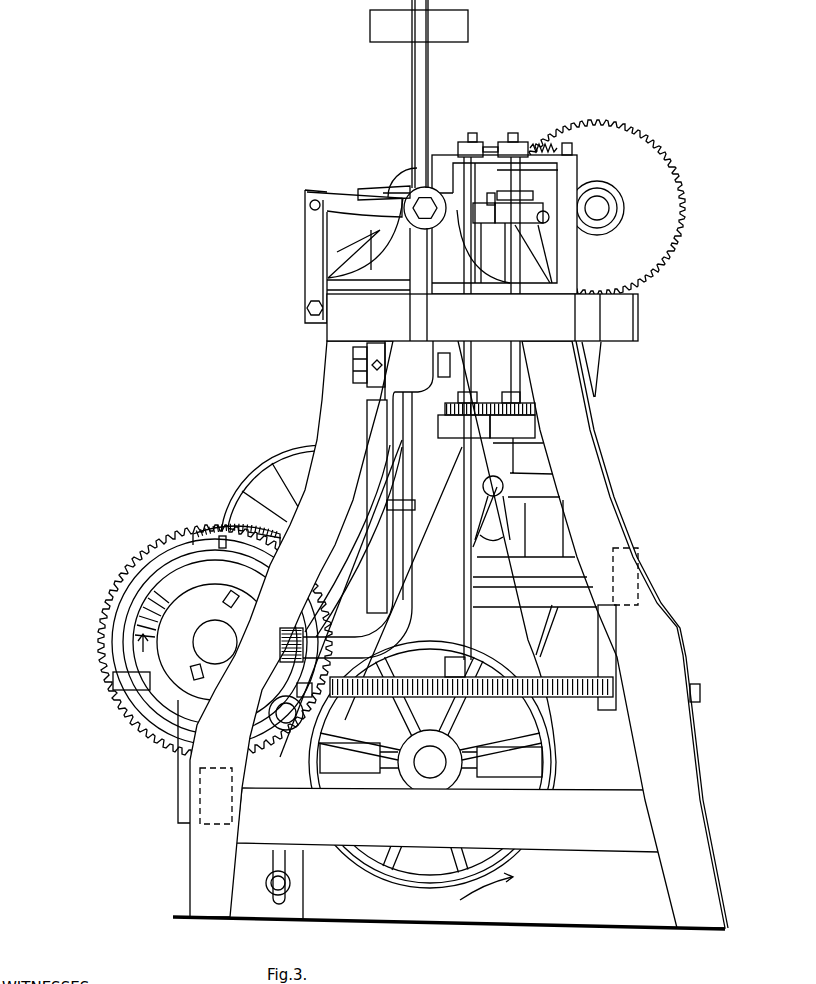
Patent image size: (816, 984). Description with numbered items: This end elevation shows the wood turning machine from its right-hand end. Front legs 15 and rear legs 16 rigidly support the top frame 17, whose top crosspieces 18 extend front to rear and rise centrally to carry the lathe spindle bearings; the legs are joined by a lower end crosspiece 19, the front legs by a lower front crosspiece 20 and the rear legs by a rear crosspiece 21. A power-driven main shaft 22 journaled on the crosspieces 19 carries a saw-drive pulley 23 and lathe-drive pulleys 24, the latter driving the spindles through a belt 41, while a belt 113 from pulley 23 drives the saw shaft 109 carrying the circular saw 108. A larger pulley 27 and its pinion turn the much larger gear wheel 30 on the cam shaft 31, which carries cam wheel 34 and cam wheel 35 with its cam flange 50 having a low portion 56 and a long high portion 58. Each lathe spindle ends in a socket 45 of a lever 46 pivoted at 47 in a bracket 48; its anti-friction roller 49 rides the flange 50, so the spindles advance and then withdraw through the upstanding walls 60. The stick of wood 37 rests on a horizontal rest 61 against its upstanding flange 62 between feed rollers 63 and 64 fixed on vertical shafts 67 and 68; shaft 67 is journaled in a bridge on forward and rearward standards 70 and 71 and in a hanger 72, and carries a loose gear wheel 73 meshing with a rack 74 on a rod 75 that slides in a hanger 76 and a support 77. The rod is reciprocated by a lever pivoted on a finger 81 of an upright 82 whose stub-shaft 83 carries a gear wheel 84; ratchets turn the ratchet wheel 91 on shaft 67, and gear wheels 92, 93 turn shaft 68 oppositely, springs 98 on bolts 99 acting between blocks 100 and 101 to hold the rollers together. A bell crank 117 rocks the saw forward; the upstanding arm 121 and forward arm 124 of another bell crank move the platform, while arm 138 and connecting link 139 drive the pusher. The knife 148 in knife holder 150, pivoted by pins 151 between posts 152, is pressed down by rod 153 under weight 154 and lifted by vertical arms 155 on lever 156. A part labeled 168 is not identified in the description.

The front legs 15 is at (316, 441).
The rear legs 16 is at (625, 634).
The top frame 17 is at (298, 341).
The top crosspieces 18 is at (391, 250).
The lower end crosspieces 19 is at (447, 820).
The lower front crosspiece 20 is at (198, 830).
The rear crosspiece 21 is at (642, 575).
The main shaft 22 is at (430, 762).
The saw-drive pulley 23 is at (510, 713).
The lathe-drive pulleys 24 is at (542, 759).
The larger pulley 27 is at (265, 466).
The gear wheel 30 is at (150, 555).
The cam shaft 31 is at (215, 642).
The cam wheel 34 is at (140, 607).
The cam wheels 35 is at (204, 635).
The stick of wood 37 is at (495, 188).
The belt 41 is at (557, 776).
The socket 45 is at (433, 230).
The lever 46 is at (410, 312).
The pivot 47 is at (352, 362).
The bracket 48 is at (363, 385).
The anti-friction roller 49 is at (290, 641).
The cam flange 50 is at (186, 589).
The low portion 56 is at (145, 637).
The high portion 58 is at (296, 690).
The upstanding walls 60 is at (434, 244).
The horizontal rest 61 is at (499, 223).
The upstanding flange 62 is at (480, 223).
The feed roller 63 is at (436, 223).
The feed roller 64 is at (530, 200).
The vertical shaft 67 is at (473, 138).
The vertical shaft 68 is at (518, 132).
The forward standard 70 is at (504, 224).
The rearward standard 71 is at (557, 247).
The hanger 72 is at (512, 426).
The gear wheel 73 is at (440, 700).
The rack 74 is at (558, 677).
The rod 75 is at (115, 683).
The hanger 76 is at (607, 632).
The support 77 is at (185, 767).
The finger 81 is at (292, 884).
The upright 82 is at (262, 877).
The stub-shaft 83 is at (280, 719).
The gear wheel 84 is at (296, 722).
The ratchet wheel 91 is at (463, 673).
The gear wheel 92 is at (537, 410).
The gear wheel 93 is at (464, 426).
The springs 98 is at (538, 143).
The bolts 99 is at (574, 149).
The block 100 is at (503, 140).
The block 101 is at (463, 140).
The circular saw 108 is at (634, 128).
The saw shaft 109 is at (624, 208).
The belt 113 is at (600, 380).
The bell crank 117 is at (375, 539).
The upstanding arm 121 is at (552, 248).
The arm 124 is at (466, 583).
The forwardly extending arm 138 is at (521, 467).
The connecting link 139 is at (485, 536).
The knife 148 is at (360, 189).
The knife holder 150 is at (354, 204).
The pins 151 is at (310, 212).
The posts 152 is at (312, 250).
The rod 153 is at (431, 72).
The weight 154 is at (470, 22).
The vertical arms 155 is at (380, 230).
The lever 156 is at (535, 597).
The bearing 168 is at (395, 173).